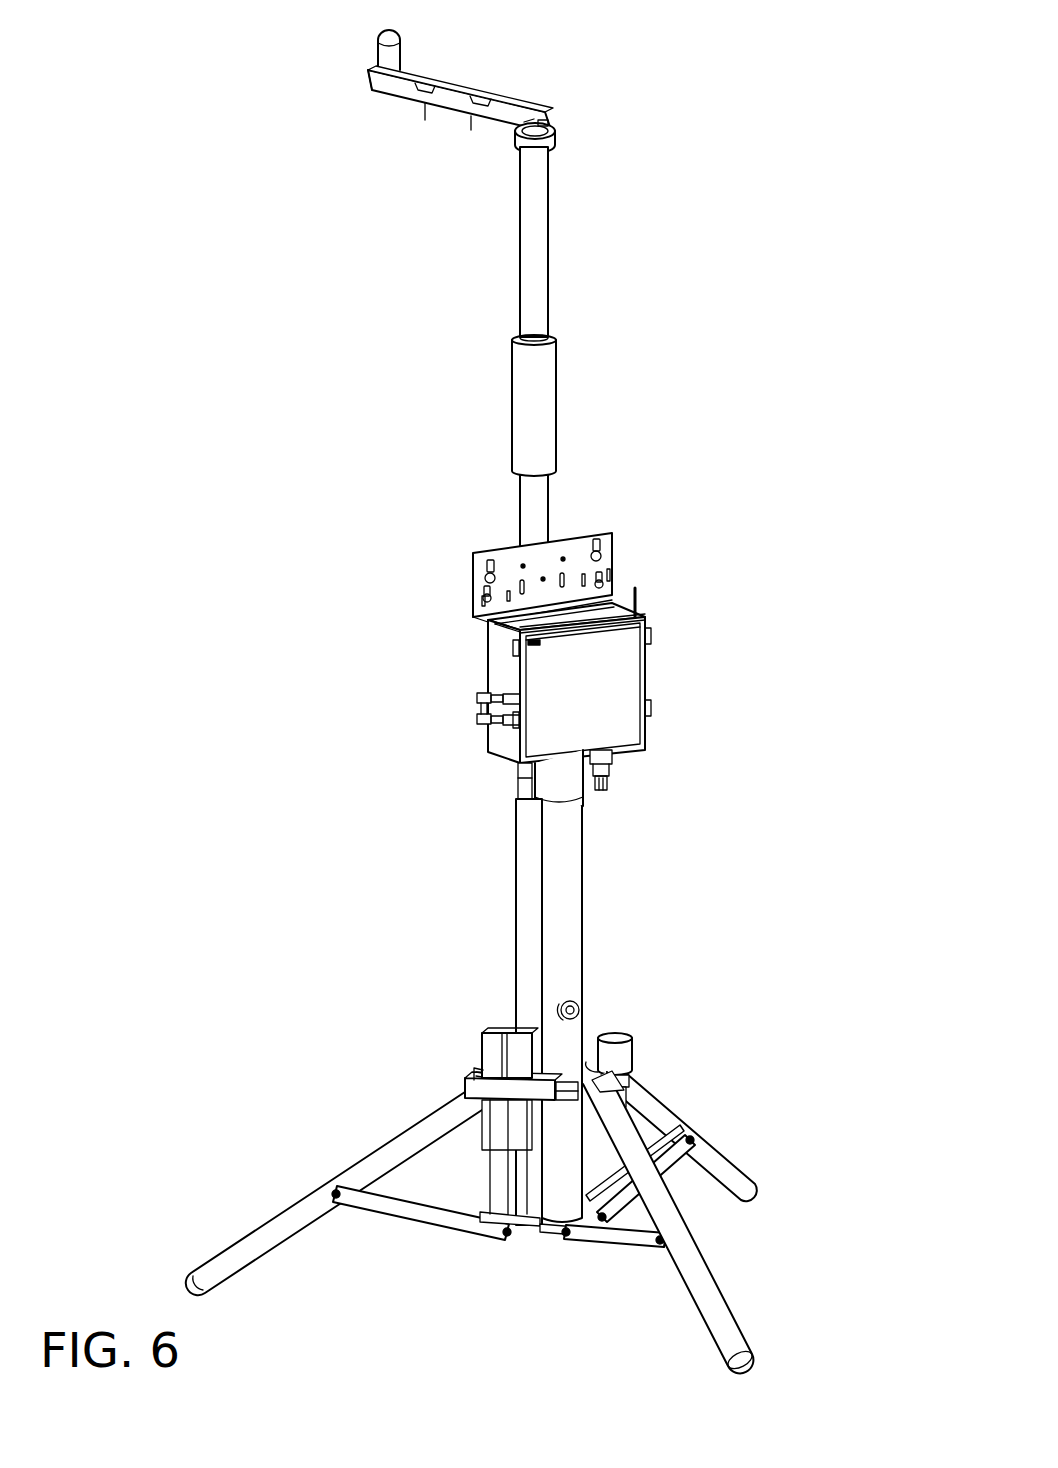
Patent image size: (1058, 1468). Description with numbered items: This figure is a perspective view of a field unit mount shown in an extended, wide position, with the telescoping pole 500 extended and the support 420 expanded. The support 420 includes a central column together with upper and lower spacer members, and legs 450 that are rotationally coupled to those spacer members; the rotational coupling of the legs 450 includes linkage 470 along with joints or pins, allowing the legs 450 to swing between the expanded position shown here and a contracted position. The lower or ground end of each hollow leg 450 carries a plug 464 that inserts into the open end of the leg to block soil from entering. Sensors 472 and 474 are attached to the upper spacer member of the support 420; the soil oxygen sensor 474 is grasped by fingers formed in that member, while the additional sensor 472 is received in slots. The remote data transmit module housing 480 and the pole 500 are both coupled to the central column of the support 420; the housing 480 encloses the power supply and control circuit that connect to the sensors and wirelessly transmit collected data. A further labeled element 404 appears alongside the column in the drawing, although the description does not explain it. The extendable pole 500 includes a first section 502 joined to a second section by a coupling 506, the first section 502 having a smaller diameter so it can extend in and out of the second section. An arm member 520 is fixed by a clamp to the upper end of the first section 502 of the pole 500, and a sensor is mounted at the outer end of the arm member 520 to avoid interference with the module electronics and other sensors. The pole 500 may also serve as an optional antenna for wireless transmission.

The telescoping pole 500 is at (426, 321).
The arm member 520 is at (467, 103).
The first section 502 is at (541, 231).
The coupling 506 is at (540, 385).
The housing 480 is at (615, 678).
The support 420 is at (656, 909).
The support pole 404 is at (530, 878).
The sensor 472 is at (490, 1057).
The soil oxygen sensor 474 is at (625, 1058).
The legs 450 is at (707, 1168).
The linkage 470 is at (620, 1240).
The plug 464 is at (752, 1362).